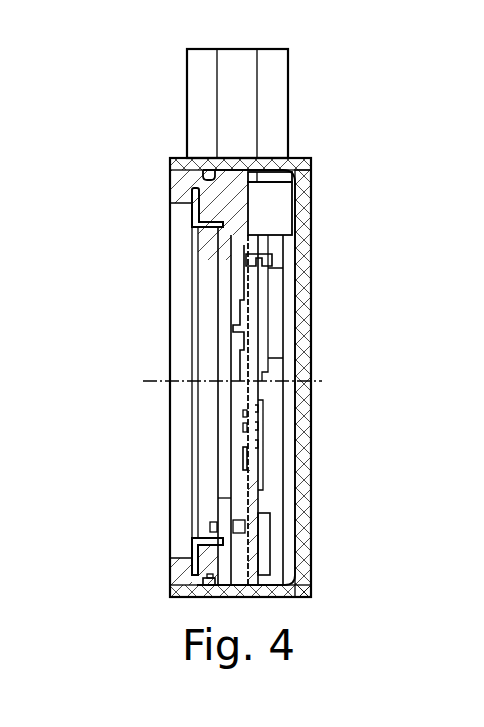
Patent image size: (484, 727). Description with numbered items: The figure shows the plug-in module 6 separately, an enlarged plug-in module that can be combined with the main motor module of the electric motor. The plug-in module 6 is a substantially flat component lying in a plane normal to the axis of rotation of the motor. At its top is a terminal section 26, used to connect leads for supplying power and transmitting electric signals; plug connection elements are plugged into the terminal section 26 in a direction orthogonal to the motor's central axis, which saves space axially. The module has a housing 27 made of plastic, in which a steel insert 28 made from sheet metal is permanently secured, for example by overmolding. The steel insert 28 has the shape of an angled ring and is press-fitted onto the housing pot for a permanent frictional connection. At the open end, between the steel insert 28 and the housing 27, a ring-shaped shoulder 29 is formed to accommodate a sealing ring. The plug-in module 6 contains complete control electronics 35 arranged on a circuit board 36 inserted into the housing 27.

The plug-in module 6 is at (107, 115).
The terminal section 26 is at (288, 100).
The housing 27 is at (311, 341).
The steel insert 28 is at (190, 213).
The shoulder 29 is at (185, 553).
The control electronics 35 is at (245, 452).
The circuit board 36 is at (228, 283).